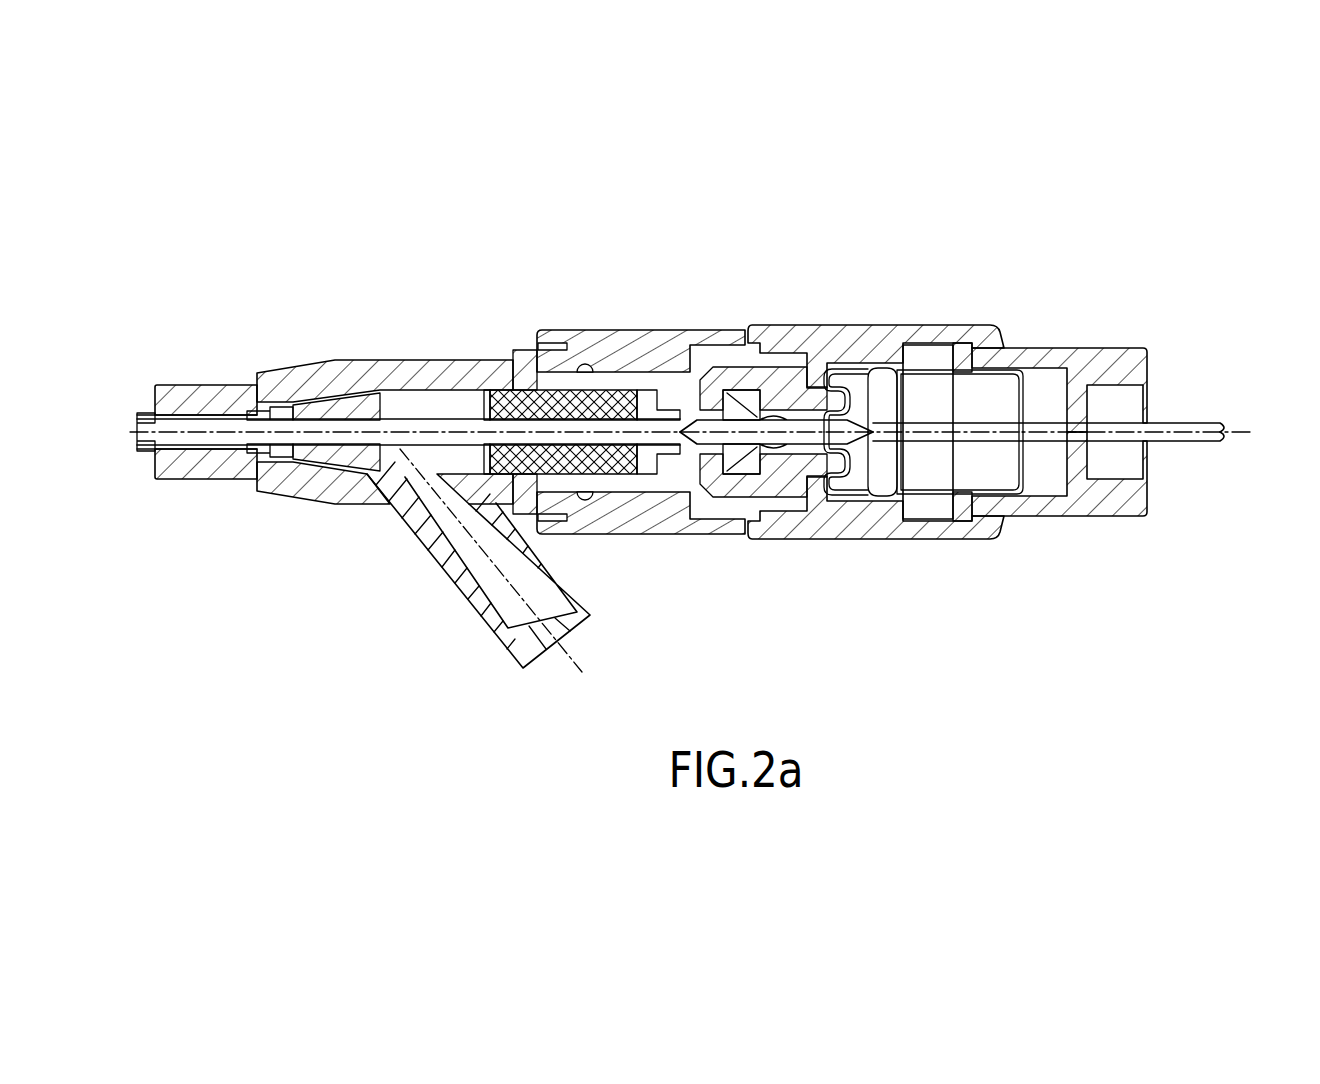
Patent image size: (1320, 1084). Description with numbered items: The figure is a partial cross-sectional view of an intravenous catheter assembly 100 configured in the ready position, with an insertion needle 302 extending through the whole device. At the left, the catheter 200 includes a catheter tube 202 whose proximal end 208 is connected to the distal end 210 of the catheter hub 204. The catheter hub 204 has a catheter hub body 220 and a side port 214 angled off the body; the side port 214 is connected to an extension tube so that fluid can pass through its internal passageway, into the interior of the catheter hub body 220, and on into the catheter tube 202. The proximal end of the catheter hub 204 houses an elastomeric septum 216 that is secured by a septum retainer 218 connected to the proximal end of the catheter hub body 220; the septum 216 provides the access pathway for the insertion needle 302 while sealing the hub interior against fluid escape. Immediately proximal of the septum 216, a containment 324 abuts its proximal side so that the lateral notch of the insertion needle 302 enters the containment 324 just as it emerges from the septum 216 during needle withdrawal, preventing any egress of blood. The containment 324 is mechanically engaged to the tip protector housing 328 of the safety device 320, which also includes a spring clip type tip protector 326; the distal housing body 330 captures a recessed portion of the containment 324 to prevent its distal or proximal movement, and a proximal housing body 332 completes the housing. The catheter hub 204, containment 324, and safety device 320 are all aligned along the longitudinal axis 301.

The catheter assembly 100 is at (1146, 287).
The catheter 200 is at (228, 406).
The catheter tube 202 is at (138, 453).
The catheter hub 204 is at (290, 483).
The proximal end 208 is at (195, 440).
The distal end 210 is at (161, 392).
The side port 214 is at (505, 633).
The elastomeric septum 216 is at (516, 406).
The septum retainer 218 is at (617, 342).
The catheter hub body 220 is at (420, 350).
The longitudinal axis 301 is at (1240, 436).
The insertion needle 302 is at (356, 445).
The safety device 320 is at (963, 312).
The containment 324 is at (678, 453).
The tip protector 326 is at (873, 478).
The tip protector housing 328 is at (983, 524).
The distal housing body 330 is at (1080, 356).
The proximal housing body 332 is at (862, 340).